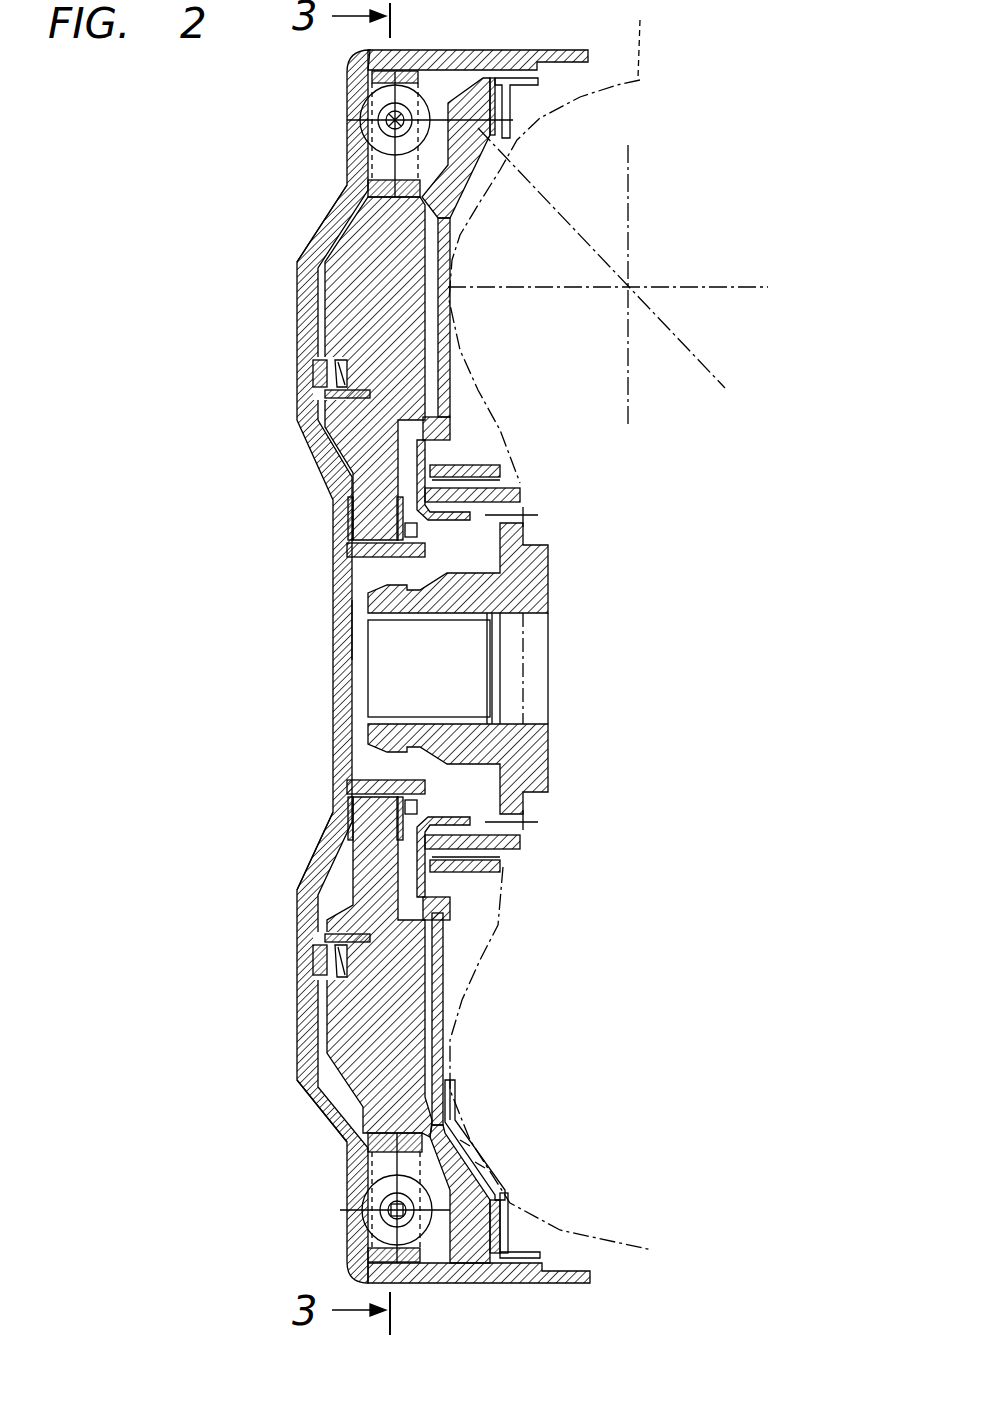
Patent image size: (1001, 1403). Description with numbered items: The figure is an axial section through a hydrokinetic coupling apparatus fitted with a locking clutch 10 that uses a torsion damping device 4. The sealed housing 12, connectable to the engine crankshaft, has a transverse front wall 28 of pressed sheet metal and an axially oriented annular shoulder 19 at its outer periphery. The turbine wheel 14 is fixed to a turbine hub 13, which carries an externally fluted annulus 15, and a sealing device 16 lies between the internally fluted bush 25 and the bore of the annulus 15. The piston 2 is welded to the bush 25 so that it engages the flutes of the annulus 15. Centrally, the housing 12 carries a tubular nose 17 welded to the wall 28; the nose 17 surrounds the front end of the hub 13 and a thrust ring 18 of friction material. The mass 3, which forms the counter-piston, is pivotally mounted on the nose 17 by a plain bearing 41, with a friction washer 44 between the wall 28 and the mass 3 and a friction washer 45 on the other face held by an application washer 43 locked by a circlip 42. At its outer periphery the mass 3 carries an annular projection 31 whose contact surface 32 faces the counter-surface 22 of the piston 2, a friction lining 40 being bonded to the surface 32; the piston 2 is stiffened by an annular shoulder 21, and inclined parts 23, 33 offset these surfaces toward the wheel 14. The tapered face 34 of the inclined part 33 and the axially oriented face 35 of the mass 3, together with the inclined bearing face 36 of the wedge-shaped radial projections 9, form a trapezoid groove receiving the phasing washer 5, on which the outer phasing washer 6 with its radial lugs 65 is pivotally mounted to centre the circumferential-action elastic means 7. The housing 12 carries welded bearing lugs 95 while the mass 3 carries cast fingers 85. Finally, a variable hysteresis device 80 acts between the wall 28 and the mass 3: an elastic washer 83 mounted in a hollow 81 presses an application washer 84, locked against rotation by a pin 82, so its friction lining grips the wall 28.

The piston 2 is at (464, 350).
The mass 3 is at (330, 275).
The torsion damping device 4 is at (366, 1233).
The phasing washer 5 is at (415, 199).
The outer phasing washer 6 is at (410, 78).
The circumferential-action elastic means 7 is at (355, 138).
The radial projections 9 is at (366, 183).
The locking clutch 10 is at (338, 1073).
The housing 12 is at (308, 548).
The turbine hub 13 is at (548, 560).
The turbine wheel 14 is at (557, 625).
The externally fluted annulus 15 is at (490, 500).
The sealing device 16 is at (520, 545).
The nose 17 is at (350, 557).
The thrust ring 18 is at (352, 628).
The annular shoulder 19 is at (525, 50).
The annular shoulder 21 is at (513, 77).
The counter-surface 22 is at (510, 1252).
The inclined part 23 is at (470, 1145).
The internally fluted bush 25 is at (478, 470).
The transverse wall 28 is at (340, 1110).
The annular projection 31 is at (469, 1262).
The contact surface 32 is at (509, 1213).
The inclined part 33 is at (455, 1123).
The face 34 is at (442, 165).
The annular face 35 is at (364, 1177).
The inclined bearing face 36 is at (330, 215).
The friction lining 40 is at (523, 1283).
The plain bearing 41 is at (360, 529).
The circlip 42 is at (478, 792).
The application washer 43 is at (415, 800).
The friction washer 44 is at (341, 837).
The friction washer 45 is at (315, 890).
The radial lugs 65 is at (365, 118).
The variable hysteresis device 80 is at (319, 368).
The hollow 81 is at (330, 975).
The pin 82 is at (334, 398).
The elastic washer 83 is at (345, 365).
The application washer 84 is at (326, 957).
The fingers 85 is at (445, 1222).
The bearing lugs 95 is at (385, 1221).